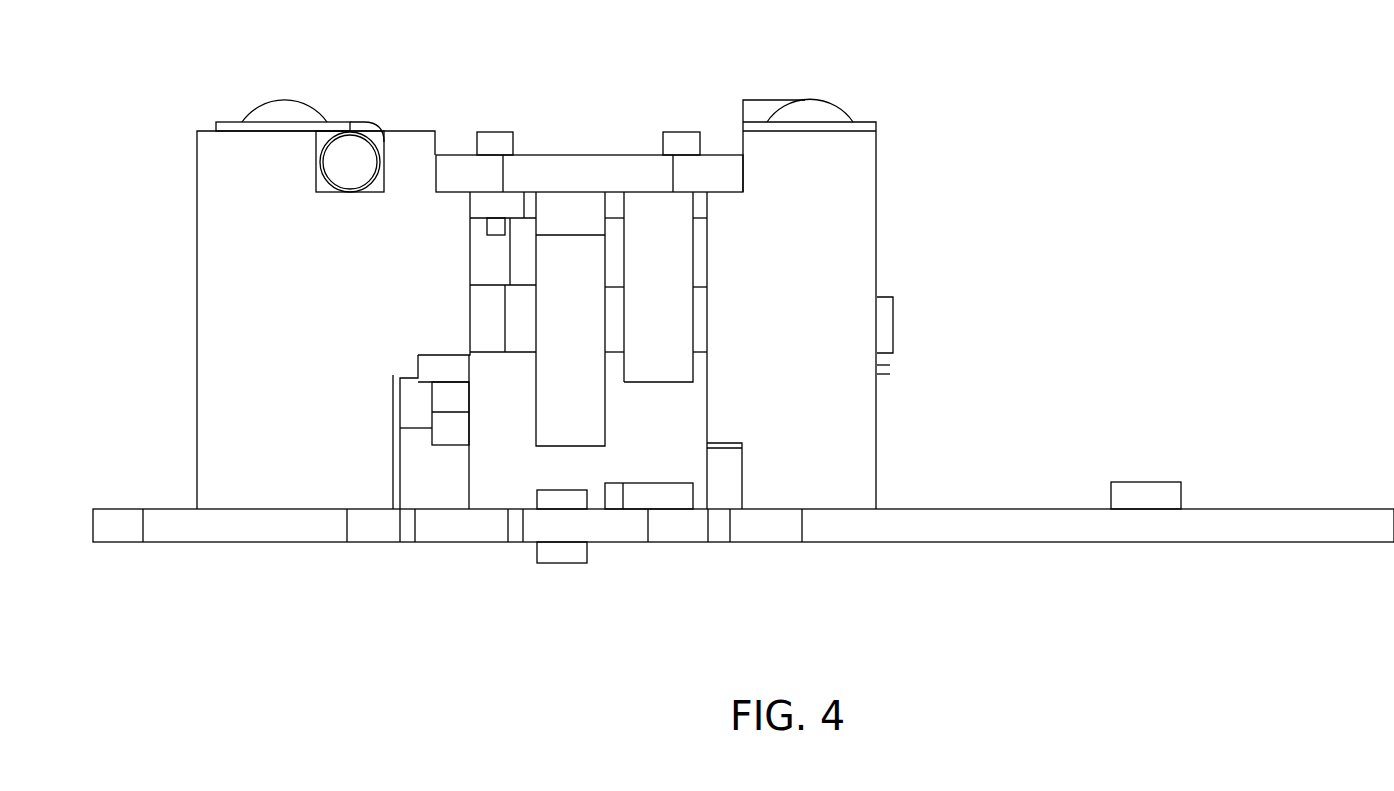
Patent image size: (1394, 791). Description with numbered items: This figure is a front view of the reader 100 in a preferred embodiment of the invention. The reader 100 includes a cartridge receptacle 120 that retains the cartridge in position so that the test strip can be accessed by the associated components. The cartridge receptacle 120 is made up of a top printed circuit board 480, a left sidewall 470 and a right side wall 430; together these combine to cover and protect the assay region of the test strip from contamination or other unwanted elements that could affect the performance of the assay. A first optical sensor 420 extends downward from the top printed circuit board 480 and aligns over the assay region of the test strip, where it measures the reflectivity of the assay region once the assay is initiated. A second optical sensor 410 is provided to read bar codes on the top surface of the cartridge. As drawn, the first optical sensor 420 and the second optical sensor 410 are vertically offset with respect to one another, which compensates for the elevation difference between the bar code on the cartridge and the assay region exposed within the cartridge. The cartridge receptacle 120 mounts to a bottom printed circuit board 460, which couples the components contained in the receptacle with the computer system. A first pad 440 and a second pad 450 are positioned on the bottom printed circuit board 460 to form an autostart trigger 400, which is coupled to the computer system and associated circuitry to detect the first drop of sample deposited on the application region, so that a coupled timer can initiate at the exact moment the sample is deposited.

The reader 100 is at (965, 63).
The cartridge receptacle 120 is at (495, 477).
The autostart trigger 400 is at (595, 509).
The second optical sensor 410 is at (665, 330).
The first optical sensor 420 is at (587, 275).
The right side wall 430 is at (858, 178).
The first pad 440 is at (648, 509).
The second pad 450 is at (509, 509).
The bottom printed circuit board 460 is at (617, 525).
The left sidewall 470 is at (227, 195).
The top printed circuit board 480 is at (563, 165).